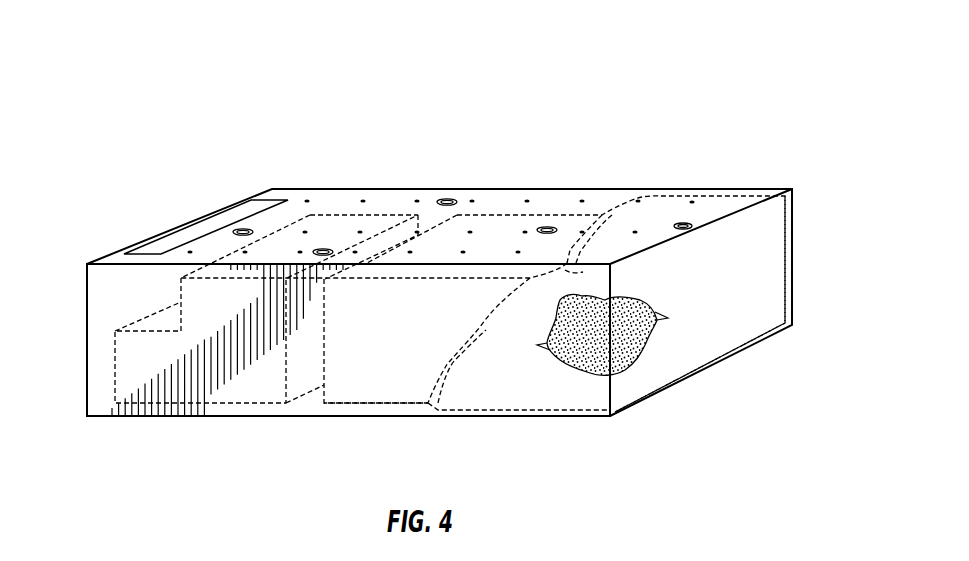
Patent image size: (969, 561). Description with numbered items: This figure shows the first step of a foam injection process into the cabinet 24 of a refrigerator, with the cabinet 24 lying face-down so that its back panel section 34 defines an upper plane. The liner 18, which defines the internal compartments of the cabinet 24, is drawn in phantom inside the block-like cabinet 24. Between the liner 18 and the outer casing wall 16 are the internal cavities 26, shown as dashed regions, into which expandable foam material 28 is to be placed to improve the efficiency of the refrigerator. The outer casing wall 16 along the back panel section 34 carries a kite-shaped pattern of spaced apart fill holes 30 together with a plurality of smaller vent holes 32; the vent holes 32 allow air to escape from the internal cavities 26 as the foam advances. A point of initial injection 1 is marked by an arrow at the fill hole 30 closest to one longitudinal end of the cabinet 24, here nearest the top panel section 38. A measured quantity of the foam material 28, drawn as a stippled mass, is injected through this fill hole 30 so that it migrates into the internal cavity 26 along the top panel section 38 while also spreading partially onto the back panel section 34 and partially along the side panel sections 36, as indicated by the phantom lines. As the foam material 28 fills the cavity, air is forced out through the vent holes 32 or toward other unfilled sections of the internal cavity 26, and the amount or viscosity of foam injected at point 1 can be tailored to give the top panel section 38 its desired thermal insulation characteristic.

The cabinet 24 is at (541, 83).
The outer casing wall 16 is at (312, 189).
The back panel section 34 is at (372, 213).
The internal cavity 26 is at (485, 213).
The vent holes 32 is at (694, 202).
The fill hole 30 is at (690, 232).
The point of initial injection 1 is at (683, 230).
The top panel section 38 is at (759, 253).
The expandable foam material 28 is at (640, 345).
The liner 18 is at (325, 350).
The side panel sections 36 is at (396, 393).